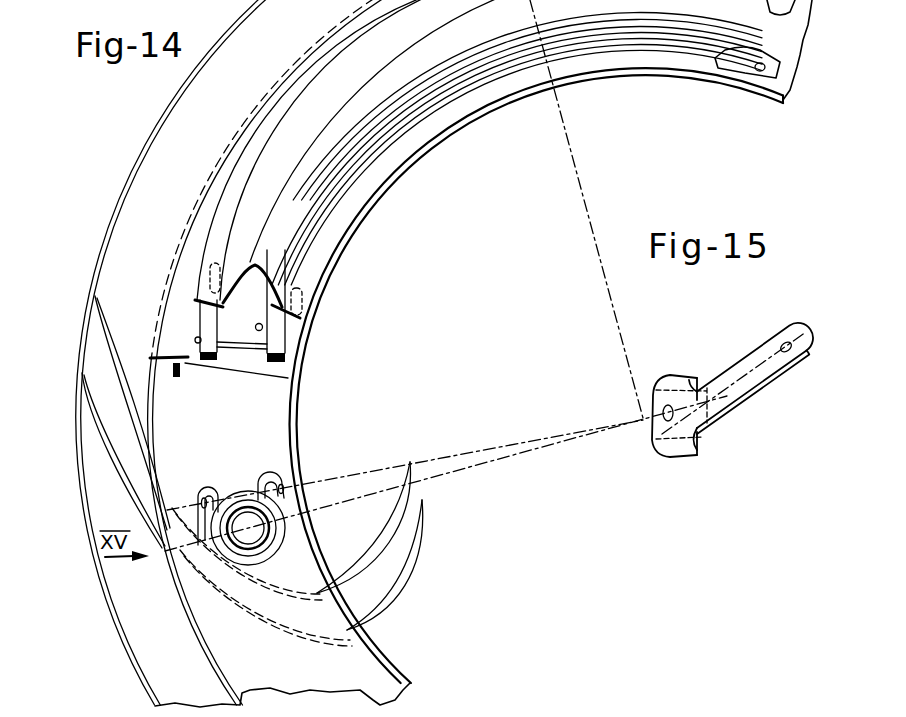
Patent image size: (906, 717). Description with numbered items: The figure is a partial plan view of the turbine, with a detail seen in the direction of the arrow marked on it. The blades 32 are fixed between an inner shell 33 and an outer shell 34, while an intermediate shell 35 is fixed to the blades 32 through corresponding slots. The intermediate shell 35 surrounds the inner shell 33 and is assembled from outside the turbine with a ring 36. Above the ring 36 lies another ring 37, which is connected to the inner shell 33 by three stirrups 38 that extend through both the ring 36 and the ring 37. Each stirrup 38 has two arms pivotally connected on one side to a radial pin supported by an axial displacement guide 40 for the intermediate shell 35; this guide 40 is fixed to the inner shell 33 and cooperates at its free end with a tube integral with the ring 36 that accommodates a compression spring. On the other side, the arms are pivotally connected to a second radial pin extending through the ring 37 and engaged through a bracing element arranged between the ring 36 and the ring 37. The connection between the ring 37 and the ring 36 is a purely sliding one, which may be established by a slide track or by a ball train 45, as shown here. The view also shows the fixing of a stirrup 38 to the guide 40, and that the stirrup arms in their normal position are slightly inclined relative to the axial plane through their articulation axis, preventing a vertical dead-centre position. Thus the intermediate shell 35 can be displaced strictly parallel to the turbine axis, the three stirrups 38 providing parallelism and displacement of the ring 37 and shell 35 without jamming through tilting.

In FIG. 14, the blades 32 is at (93, 430).
In FIG. 14, the inner shell 33 is at (297, 440).
In FIG. 14, the outer shell 34 is at (93, 553).
In FIG. 14, the intermediate shell 35 is at (169, 328).
In FIG. 14, the ring 36 is at (263, 327).
In FIG. 14, the ring 37 is at (282, 253).
In FIG. 14, the stirrup 38 is at (260, 465).
In FIG. 15, the stirrup 38 is at (736, 373).
In FIG. 14, the axial displacement guide 40 is at (257, 535).
In FIG. 15, the axial displacement guide 40 is at (651, 437).
In FIG. 14, the ball train 45 is at (288, 357).